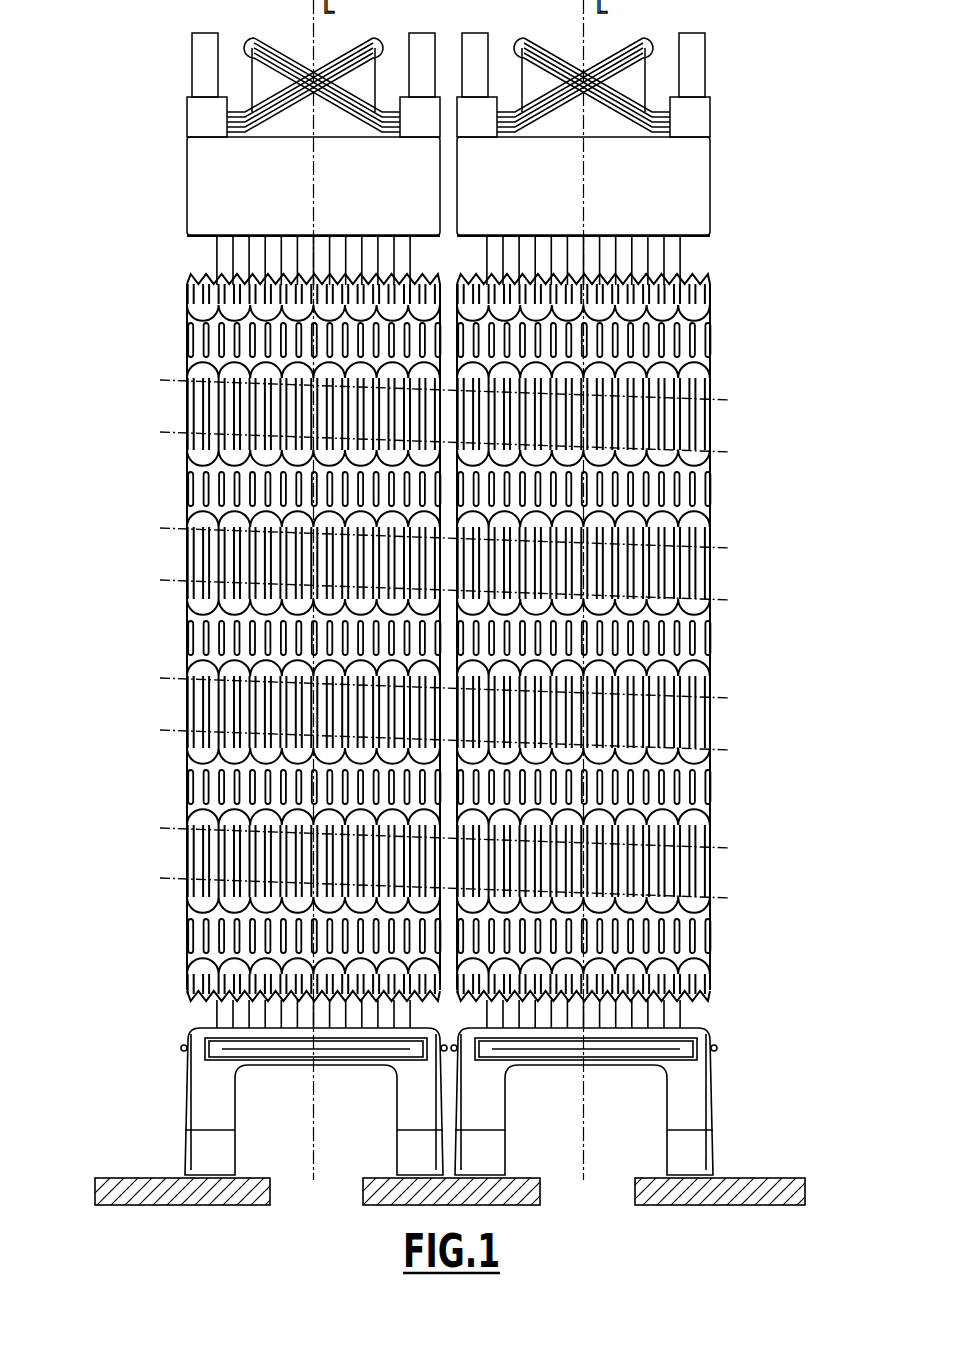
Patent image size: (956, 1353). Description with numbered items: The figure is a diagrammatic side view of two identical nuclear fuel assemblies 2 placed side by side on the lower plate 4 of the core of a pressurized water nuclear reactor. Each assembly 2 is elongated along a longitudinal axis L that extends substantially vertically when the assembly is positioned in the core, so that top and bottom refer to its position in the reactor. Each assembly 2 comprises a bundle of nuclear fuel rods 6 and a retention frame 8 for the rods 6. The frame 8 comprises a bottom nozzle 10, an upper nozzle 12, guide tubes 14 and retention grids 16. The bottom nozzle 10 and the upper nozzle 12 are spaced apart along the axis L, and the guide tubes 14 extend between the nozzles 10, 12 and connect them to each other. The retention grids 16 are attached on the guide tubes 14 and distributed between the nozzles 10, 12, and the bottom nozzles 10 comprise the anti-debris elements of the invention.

The nuclear fuel assembly 2 is at (116, 76).
The lower plate 4 is at (748, 1196).
The nuclear fuel rods 6 is at (195, 309).
The retention frame 8 is at (164, 235).
The bottom nozzle 10 is at (205, 1108).
The upper nozzle 12 is at (200, 176).
The guide tubes 14 is at (258, 262).
The retention grids 16 is at (187, 347).